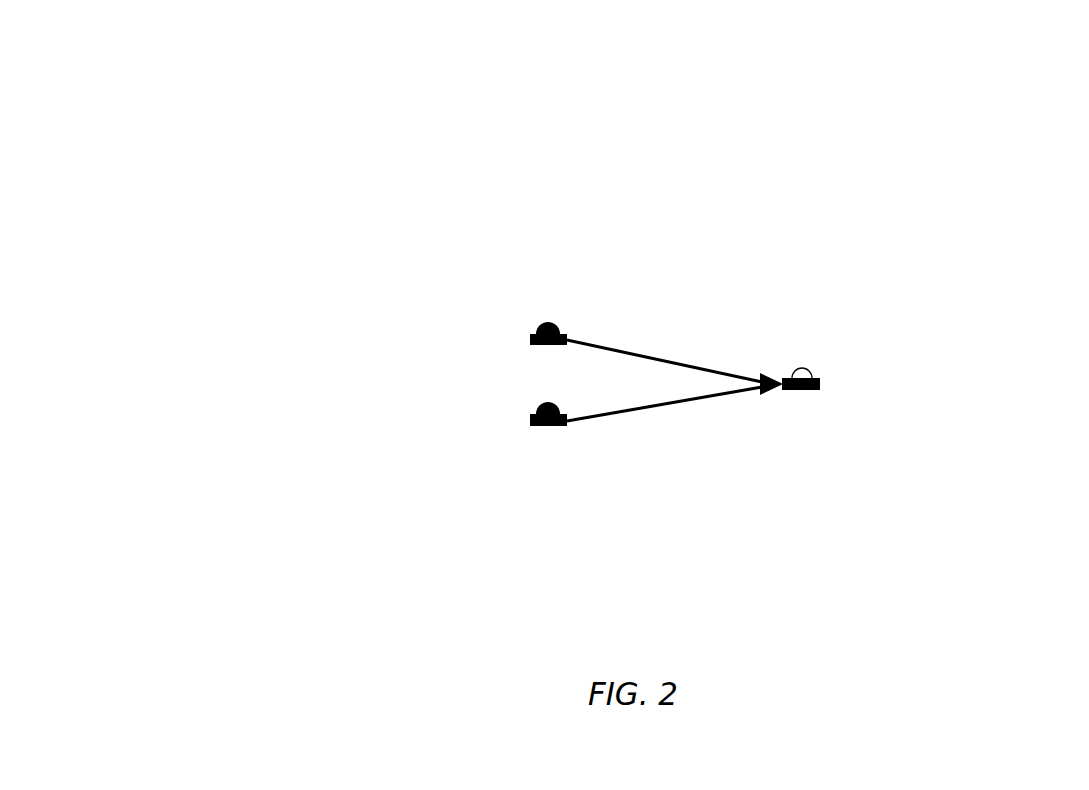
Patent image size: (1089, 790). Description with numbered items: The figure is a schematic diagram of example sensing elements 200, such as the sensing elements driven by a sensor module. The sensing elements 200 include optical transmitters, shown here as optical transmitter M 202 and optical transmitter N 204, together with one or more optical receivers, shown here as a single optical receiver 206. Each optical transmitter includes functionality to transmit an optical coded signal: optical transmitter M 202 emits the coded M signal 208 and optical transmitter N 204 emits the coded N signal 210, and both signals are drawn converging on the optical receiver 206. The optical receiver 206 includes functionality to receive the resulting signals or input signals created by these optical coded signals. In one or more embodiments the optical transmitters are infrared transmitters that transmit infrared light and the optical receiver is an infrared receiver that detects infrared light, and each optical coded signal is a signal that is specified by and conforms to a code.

The sensing elements 200 is at (318, 102).
The optical transmitter M 202 is at (512, 326).
The optical transmitter N 204 is at (512, 410).
The optical receiver 206 is at (832, 367).
The coded M signal 208 is at (666, 335).
The coded N signal 210 is at (710, 415).